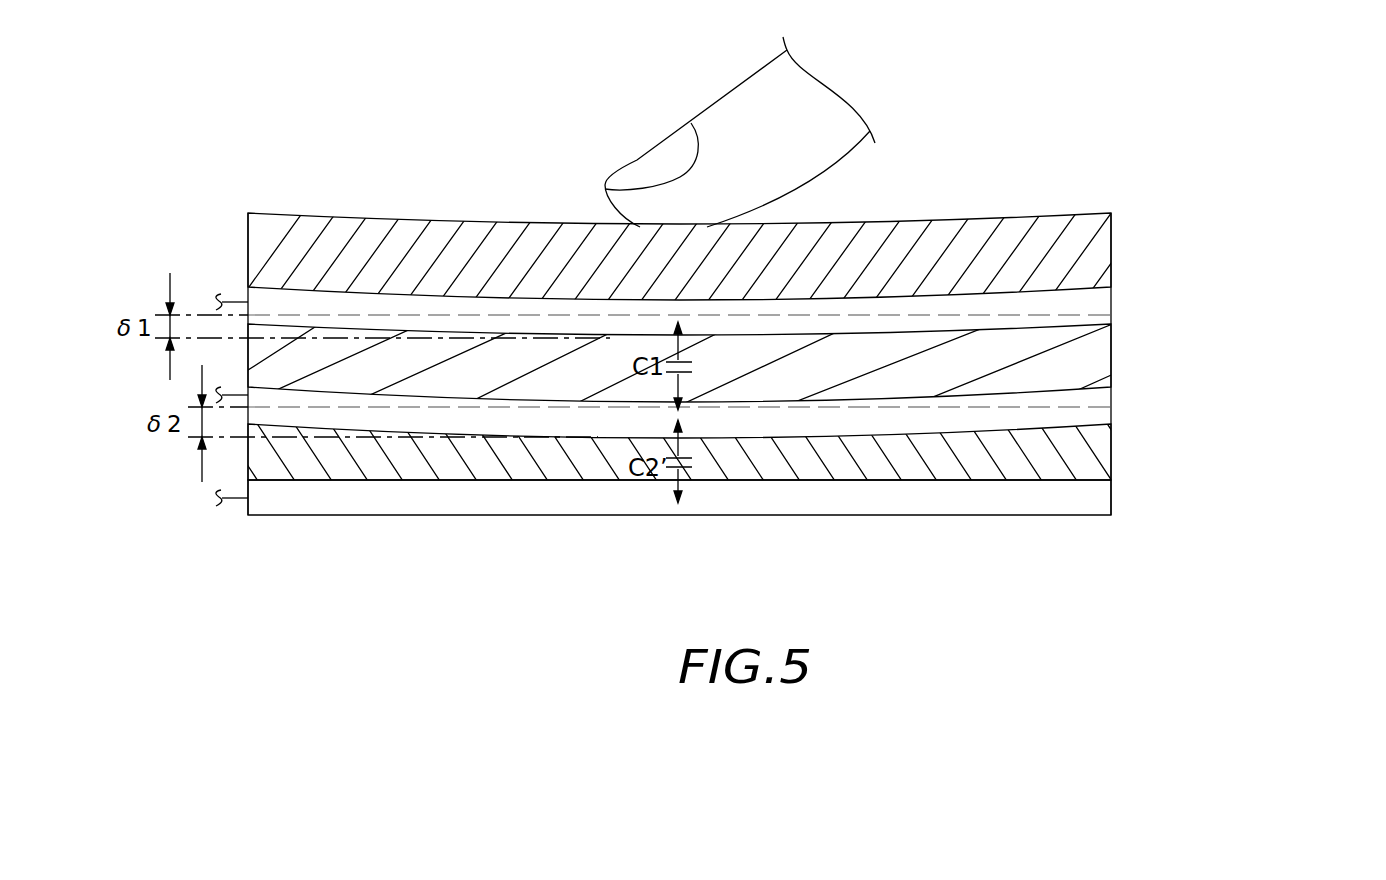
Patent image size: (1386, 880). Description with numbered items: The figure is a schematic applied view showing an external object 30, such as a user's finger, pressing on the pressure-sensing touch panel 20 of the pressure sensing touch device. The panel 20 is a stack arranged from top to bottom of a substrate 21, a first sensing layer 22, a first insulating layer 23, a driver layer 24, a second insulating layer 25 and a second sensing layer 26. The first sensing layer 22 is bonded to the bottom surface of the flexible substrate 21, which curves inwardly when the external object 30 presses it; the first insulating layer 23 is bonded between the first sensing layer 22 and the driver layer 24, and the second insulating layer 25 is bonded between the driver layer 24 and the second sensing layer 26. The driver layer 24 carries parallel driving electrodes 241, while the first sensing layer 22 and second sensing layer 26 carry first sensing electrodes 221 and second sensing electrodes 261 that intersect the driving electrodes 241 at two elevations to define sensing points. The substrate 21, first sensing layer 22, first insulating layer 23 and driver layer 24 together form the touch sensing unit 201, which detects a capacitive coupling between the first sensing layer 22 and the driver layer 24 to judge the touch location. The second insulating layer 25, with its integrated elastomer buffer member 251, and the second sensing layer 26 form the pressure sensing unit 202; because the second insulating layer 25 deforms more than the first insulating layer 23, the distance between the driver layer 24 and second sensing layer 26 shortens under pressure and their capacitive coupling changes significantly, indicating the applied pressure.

The pressure-sensing touch panel 20 is at (764, 322).
The touch sensing unit 201 is at (764, 321).
The pressure sensing unit 202 is at (795, 454).
The substrate 21 is at (1090, 257).
The first sensing layer 22 is at (723, 303).
The first sensing electrodes 221 is at (1090, 308).
The first insulating layer 23 is at (1090, 367).
The driver layer 24 is at (740, 406).
The driving electrode 241 is at (1097, 408).
The second insulating layer 25 is at (755, 452).
The elastomer buffer member 251 is at (1085, 462).
The second sensing layer 26 is at (754, 494).
The second sensing electrodes 261 is at (1098, 502).
The external object 30 is at (650, 167).